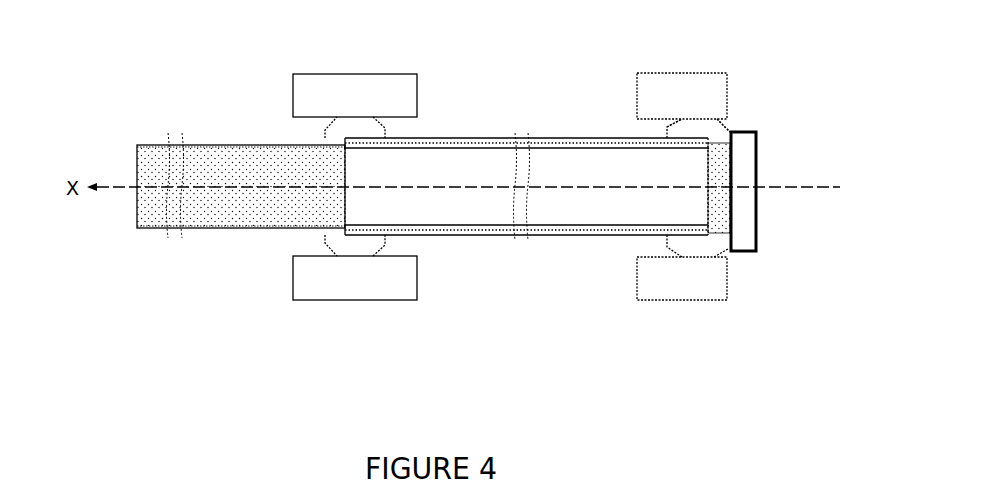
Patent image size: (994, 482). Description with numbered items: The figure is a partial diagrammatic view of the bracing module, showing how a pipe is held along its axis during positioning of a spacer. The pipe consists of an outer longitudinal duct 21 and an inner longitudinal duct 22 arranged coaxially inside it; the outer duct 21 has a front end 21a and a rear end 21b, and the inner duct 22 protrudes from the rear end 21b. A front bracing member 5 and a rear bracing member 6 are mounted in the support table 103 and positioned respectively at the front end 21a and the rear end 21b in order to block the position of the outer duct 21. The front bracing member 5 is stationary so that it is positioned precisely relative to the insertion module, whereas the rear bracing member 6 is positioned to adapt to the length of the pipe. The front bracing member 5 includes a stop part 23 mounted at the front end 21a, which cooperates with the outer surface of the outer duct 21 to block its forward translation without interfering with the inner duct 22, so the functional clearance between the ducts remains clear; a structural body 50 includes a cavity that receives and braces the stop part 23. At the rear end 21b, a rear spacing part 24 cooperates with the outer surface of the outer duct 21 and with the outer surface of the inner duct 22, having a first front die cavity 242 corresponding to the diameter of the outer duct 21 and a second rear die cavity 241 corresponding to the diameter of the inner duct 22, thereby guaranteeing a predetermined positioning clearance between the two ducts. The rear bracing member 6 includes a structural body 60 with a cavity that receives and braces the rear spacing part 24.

The support table 103 is at (158, 84).
The inner longitudinal duct 22 is at (197, 147).
The outer longitudinal duct 21 is at (470, 144).
The front end 21a is at (347, 183).
The rear end 21b is at (728, 174).
The front bracing member 5 is at (385, 223).
The structural body 50 is at (330, 297).
The stop part 23 is at (340, 245).
The rear bracing member 6 is at (715, 222).
The structural body 60 is at (673, 300).
The rear spacing part 24 is at (680, 245).
The second rear die cavity 241 is at (713, 143).
The first front die cavity 242 is at (678, 137).